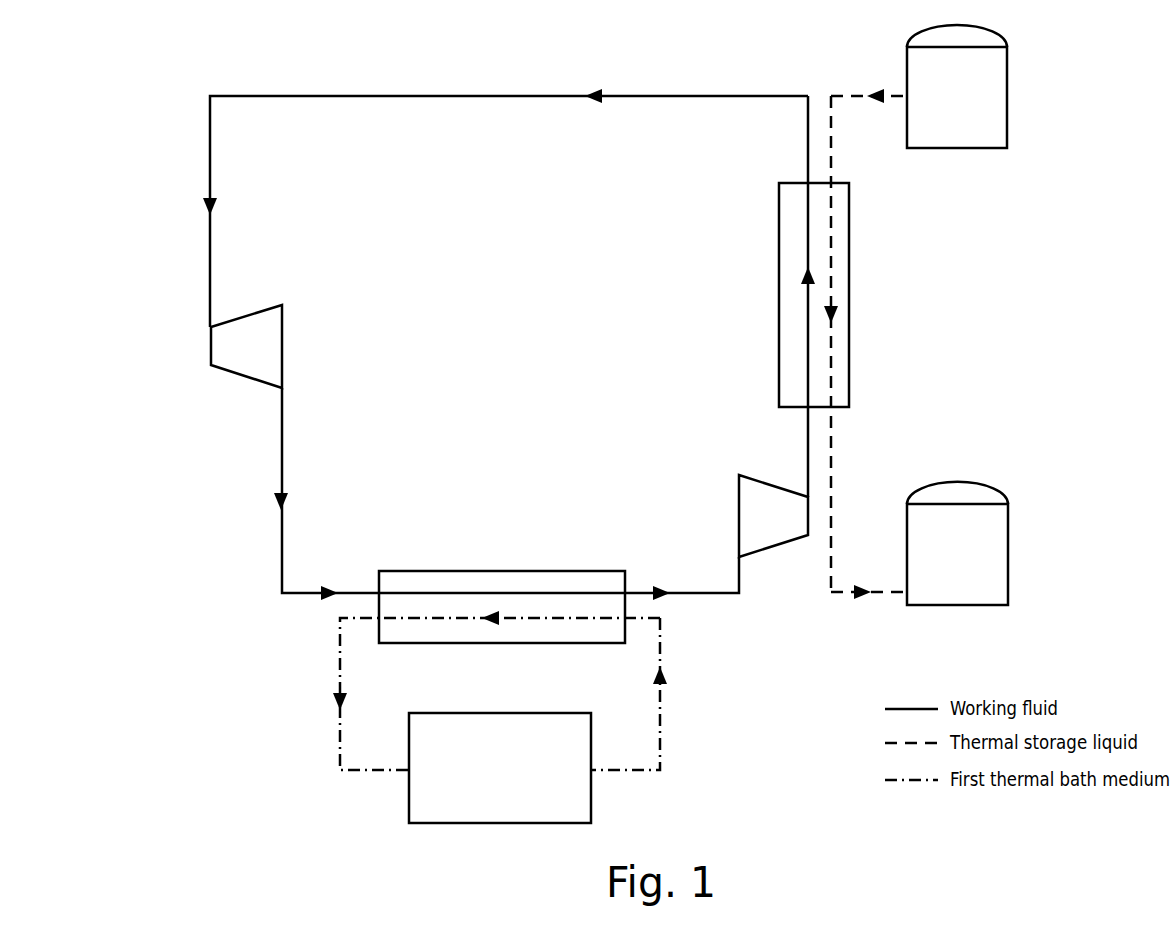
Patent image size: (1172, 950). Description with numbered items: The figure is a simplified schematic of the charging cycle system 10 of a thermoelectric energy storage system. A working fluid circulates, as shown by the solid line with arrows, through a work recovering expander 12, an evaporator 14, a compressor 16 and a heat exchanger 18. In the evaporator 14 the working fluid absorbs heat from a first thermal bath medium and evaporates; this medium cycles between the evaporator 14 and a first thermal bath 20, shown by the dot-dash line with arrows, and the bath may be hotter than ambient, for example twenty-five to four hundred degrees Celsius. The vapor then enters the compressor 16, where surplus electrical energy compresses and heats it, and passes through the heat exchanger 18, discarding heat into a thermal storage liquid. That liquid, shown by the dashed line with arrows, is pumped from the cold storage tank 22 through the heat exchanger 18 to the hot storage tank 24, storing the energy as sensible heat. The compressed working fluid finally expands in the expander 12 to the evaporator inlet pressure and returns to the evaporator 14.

The charging cycle system 10 is at (542, 357).
The work recovering expander 12 is at (211, 343).
The evaporator 14 is at (507, 571).
The compressor 16 is at (738, 520).
The heat exchanger 18 is at (779, 297).
The first thermal bath 20 is at (591, 790).
The cold storage tank 22 is at (1007, 97).
The hot storage tank 24 is at (1008, 552).